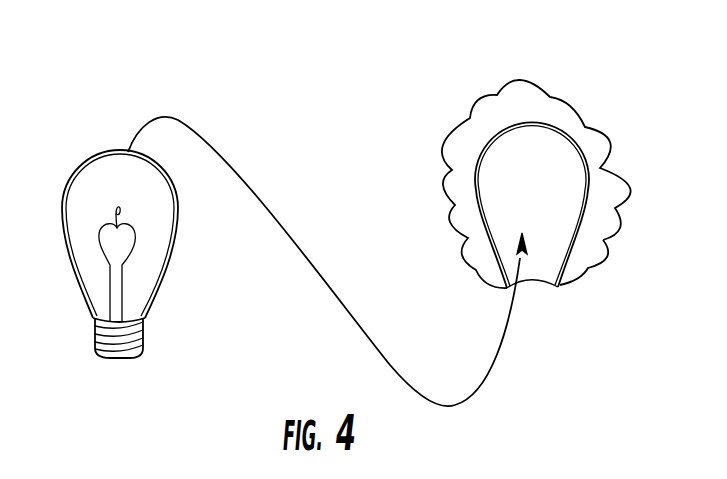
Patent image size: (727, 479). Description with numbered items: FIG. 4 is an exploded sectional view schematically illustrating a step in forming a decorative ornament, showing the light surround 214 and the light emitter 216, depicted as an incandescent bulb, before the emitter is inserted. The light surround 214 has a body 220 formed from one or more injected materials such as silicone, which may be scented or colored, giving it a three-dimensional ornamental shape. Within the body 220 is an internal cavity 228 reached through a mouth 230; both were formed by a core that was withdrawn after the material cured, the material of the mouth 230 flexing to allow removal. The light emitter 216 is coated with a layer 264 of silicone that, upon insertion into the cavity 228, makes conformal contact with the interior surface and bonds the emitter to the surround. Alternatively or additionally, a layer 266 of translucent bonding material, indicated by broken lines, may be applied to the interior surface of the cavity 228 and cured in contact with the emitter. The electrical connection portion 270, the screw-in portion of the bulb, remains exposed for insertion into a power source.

The light surround 214 is at (601, 134).
The light emitter 216 is at (156, 253).
The body 220 is at (586, 262).
The internal cavity 228 is at (575, 218).
The mouth 230 is at (550, 282).
The layer of silicone 264 is at (178, 218).
The layer of bonding material 266 is at (531, 132).
The electrical connection portion 270 is at (147, 320).